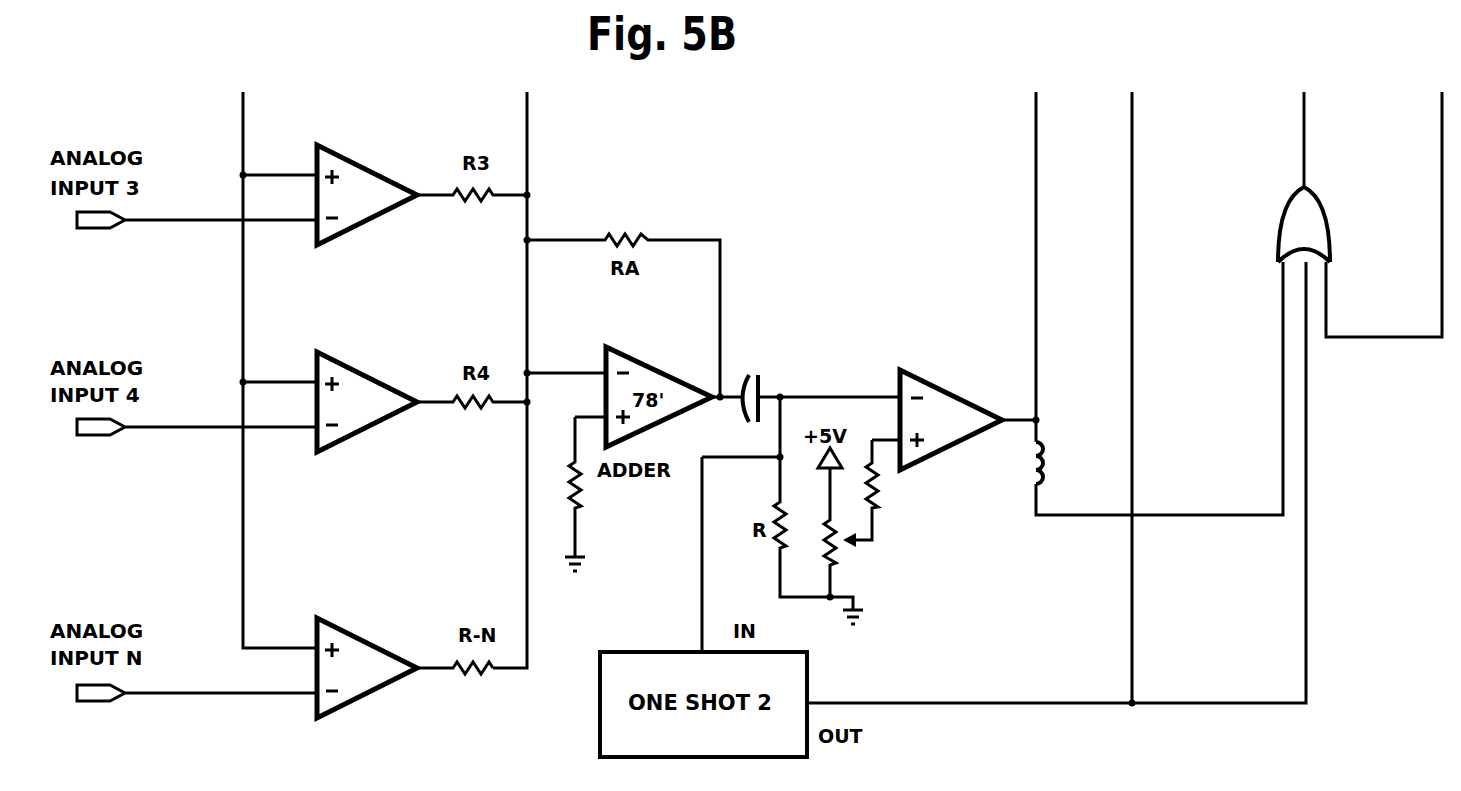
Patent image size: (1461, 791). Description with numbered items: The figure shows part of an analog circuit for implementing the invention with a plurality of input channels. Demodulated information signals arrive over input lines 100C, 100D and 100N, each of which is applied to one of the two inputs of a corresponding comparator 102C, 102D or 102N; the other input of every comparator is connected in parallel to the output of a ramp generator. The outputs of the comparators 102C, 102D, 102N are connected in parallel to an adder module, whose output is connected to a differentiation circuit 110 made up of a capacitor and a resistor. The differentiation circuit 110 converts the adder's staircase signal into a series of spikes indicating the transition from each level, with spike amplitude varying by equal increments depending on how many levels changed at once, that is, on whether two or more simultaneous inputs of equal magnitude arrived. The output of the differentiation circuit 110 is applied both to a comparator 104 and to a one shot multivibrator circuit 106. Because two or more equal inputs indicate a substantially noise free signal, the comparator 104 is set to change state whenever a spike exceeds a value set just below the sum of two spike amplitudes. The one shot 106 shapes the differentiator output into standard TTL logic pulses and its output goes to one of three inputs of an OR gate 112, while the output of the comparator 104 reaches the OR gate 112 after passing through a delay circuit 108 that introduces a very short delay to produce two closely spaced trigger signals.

The input line 100C is at (197, 211).
The input line 100D is at (197, 418).
The input line 100N is at (197, 684).
The comparator 102C is at (374, 168).
The comparator 102D is at (374, 375).
The comparator 102N is at (374, 641).
The comparator 104 is at (941, 405).
The one shot multivibrator circuit 106 is at (1056, 483).
The delay circuit 108 is at (1040, 472).
The differentiation circuit 110 is at (758, 393).
The OR gate 112 is at (1283, 212).